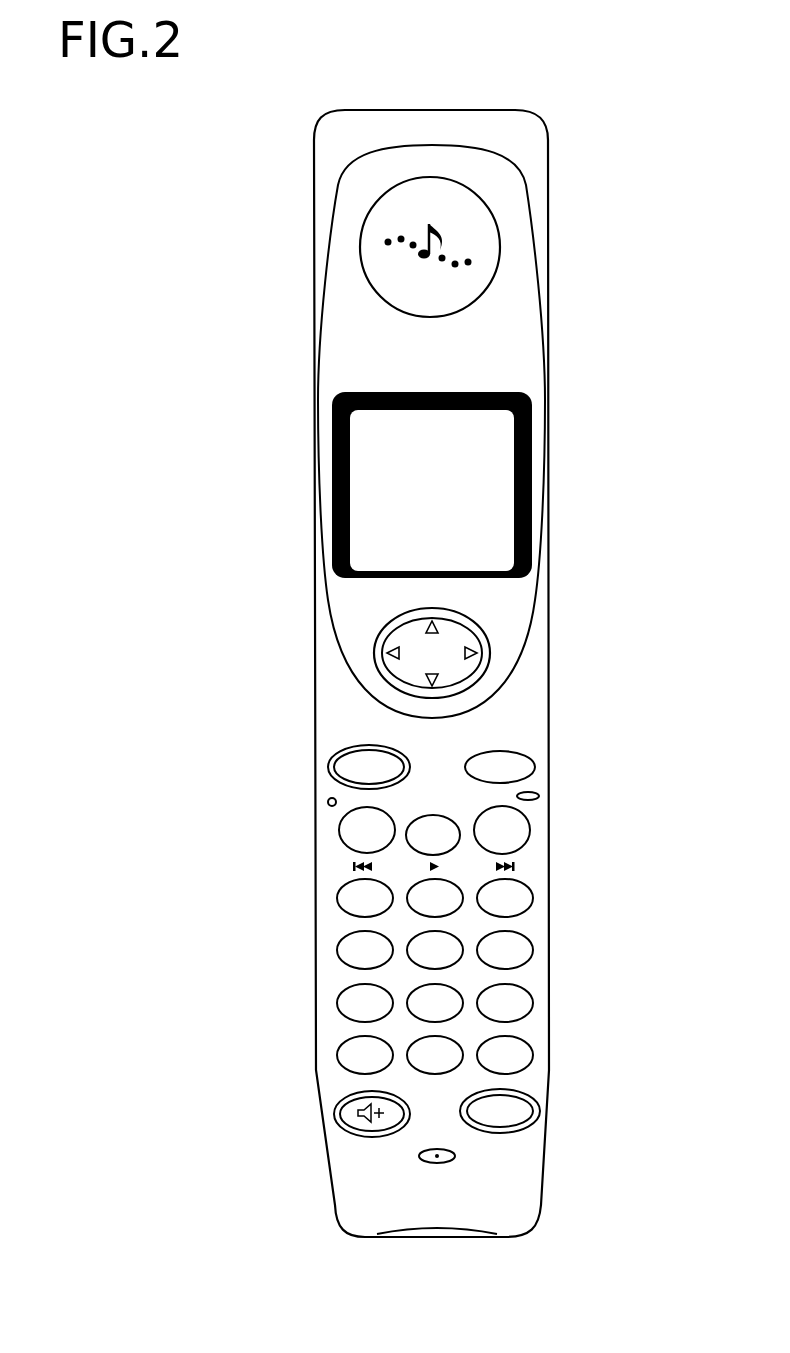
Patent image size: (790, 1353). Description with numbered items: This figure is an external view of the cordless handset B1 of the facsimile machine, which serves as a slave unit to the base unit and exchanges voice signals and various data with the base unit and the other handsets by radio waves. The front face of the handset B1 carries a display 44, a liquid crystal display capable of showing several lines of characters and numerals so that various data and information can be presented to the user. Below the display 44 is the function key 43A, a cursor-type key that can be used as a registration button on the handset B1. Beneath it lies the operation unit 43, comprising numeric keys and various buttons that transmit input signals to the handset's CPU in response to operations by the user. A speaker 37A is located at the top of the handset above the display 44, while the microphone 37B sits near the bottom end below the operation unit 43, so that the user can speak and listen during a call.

The handset B1 is at (430, 99).
The speaker 37A is at (473, 253).
The display 44 is at (470, 485).
The function key 43A is at (490, 657).
The operation unit 43 is at (316, 822).
The microphone 37B is at (437, 1163).